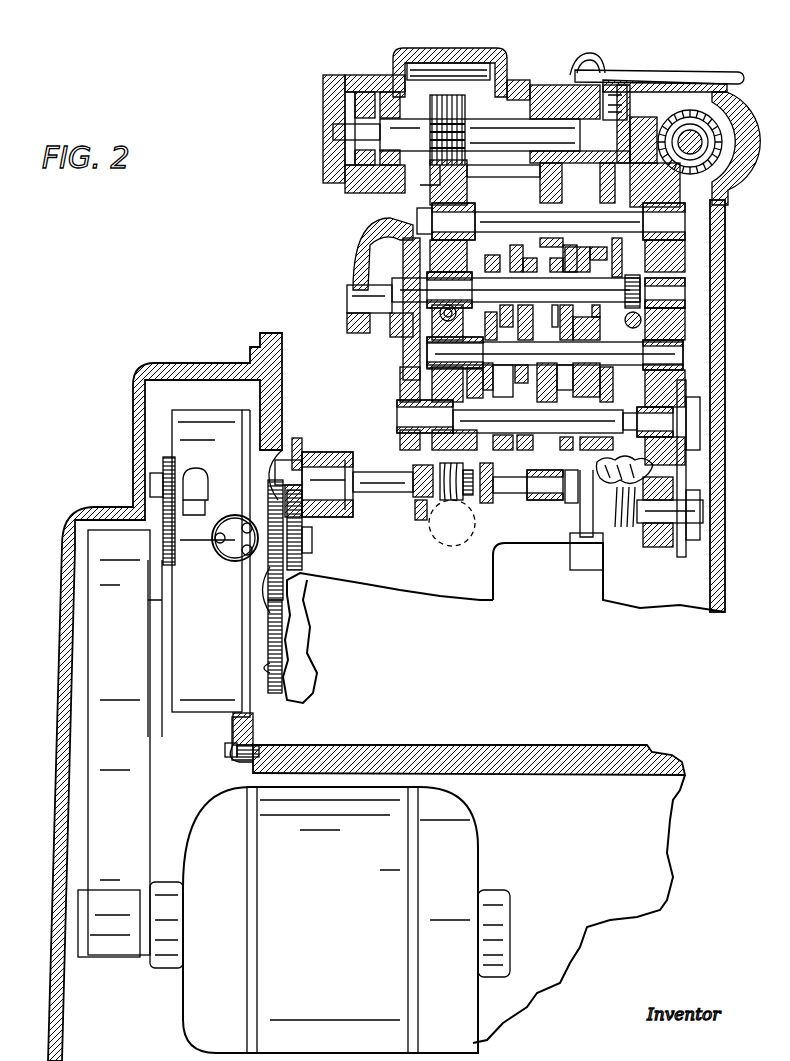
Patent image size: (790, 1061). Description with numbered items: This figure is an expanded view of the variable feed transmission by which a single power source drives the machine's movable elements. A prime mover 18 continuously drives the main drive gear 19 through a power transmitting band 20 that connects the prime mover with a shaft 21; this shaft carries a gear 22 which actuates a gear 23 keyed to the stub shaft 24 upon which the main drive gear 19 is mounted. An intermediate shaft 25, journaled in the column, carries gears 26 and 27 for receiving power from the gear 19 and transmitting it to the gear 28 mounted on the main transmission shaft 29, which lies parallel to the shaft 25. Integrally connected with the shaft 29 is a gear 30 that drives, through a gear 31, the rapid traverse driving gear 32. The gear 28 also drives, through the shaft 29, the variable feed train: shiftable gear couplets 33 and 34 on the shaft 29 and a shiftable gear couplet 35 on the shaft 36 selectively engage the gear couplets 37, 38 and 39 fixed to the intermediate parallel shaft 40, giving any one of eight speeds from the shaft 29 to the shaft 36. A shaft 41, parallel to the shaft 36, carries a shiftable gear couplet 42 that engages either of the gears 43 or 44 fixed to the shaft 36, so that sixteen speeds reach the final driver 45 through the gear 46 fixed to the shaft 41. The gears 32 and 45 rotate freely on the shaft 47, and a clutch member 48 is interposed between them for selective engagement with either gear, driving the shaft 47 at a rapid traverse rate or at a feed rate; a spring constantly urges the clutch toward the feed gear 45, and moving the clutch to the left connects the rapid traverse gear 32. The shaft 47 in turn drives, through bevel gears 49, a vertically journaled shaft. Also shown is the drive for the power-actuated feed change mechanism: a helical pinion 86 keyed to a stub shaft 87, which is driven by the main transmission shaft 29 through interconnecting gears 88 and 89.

The prime mover 18 is at (460, 862).
The main drive gear 19 is at (300, 560).
The power transmitting band 20 is at (135, 778).
The shaft 21 is at (162, 662).
The gear 22 is at (282, 625).
The gear 23 is at (292, 455).
The stub shaft 24 is at (312, 538).
The intermediate shaft 25 is at (366, 471).
The gear 26 is at (298, 458).
The gear 27 is at (430, 505).
The gear 28 is at (408, 385).
The main transmission shaft 29 is at (400, 415).
The gear 30 is at (412, 395).
The gear 31 is at (400, 252).
The rapid traverse driving gear 32 is at (418, 75).
The shiftable gear couplet 33 is at (520, 447).
The shiftable gear couplet 34 is at (585, 448).
The shiftable gear couplet 35 is at (518, 258).
The shaft 36 is at (560, 262).
The gear couplet 37 is at (492, 380).
The gear couplet 38 is at (540, 378).
The gear couplet 39 is at (590, 380).
The intermediate parallel shaft 40 is at (610, 352).
The shaft 41 is at (495, 212).
The shiftable gear couplet 42 is at (612, 188).
The gear 43 is at (570, 258).
The gear 44 is at (632, 280).
The final driver 45 is at (568, 68).
The gear 46 is at (530, 215).
The shaft 47 is at (580, 137).
The clutch member 48 is at (528, 65).
The bevel gears 49 is at (658, 107).
The helical pinion 86 is at (625, 530).
The stub shaft 87 is at (663, 524).
The gear 88 is at (700, 470).
The gear 89 is at (703, 455).